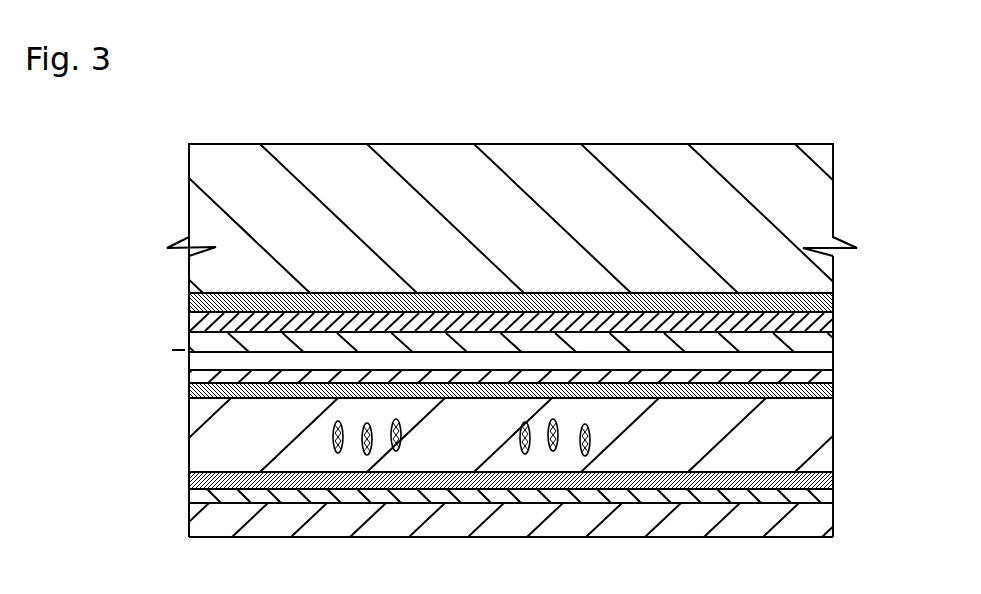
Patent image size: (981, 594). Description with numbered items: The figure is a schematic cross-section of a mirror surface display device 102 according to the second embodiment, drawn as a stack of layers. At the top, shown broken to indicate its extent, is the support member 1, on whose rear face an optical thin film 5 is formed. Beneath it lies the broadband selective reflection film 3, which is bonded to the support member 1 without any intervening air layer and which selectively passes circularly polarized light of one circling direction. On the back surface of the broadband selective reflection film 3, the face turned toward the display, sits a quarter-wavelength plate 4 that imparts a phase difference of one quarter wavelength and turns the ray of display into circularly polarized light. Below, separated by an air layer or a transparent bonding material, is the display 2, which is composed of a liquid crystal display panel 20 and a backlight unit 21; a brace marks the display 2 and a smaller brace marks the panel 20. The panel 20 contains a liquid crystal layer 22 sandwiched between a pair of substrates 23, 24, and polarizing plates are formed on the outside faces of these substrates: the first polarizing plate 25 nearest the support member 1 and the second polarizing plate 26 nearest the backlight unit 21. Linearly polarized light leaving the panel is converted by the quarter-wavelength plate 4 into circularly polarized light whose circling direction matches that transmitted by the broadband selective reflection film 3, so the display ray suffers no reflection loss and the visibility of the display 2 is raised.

The mirror surface display device 102 is at (742, 111).
The support member 1 is at (812, 207).
The optical thin film 5 is at (189, 300).
The broadband selective reflection film 3 is at (820, 315).
The quarter-wavelength plate 4 is at (818, 346).
The display 2 is at (125, 371).
The liquid crystal display panel 20 is at (180, 371).
The first polarizing plate 25 is at (826, 378).
The substrate 23 is at (826, 389).
The liquid crystal layer 22 is at (820, 428).
The substrate 24 is at (833, 478).
The second polarizing plate 26 is at (820, 495).
The backlight unit 21 is at (826, 518).